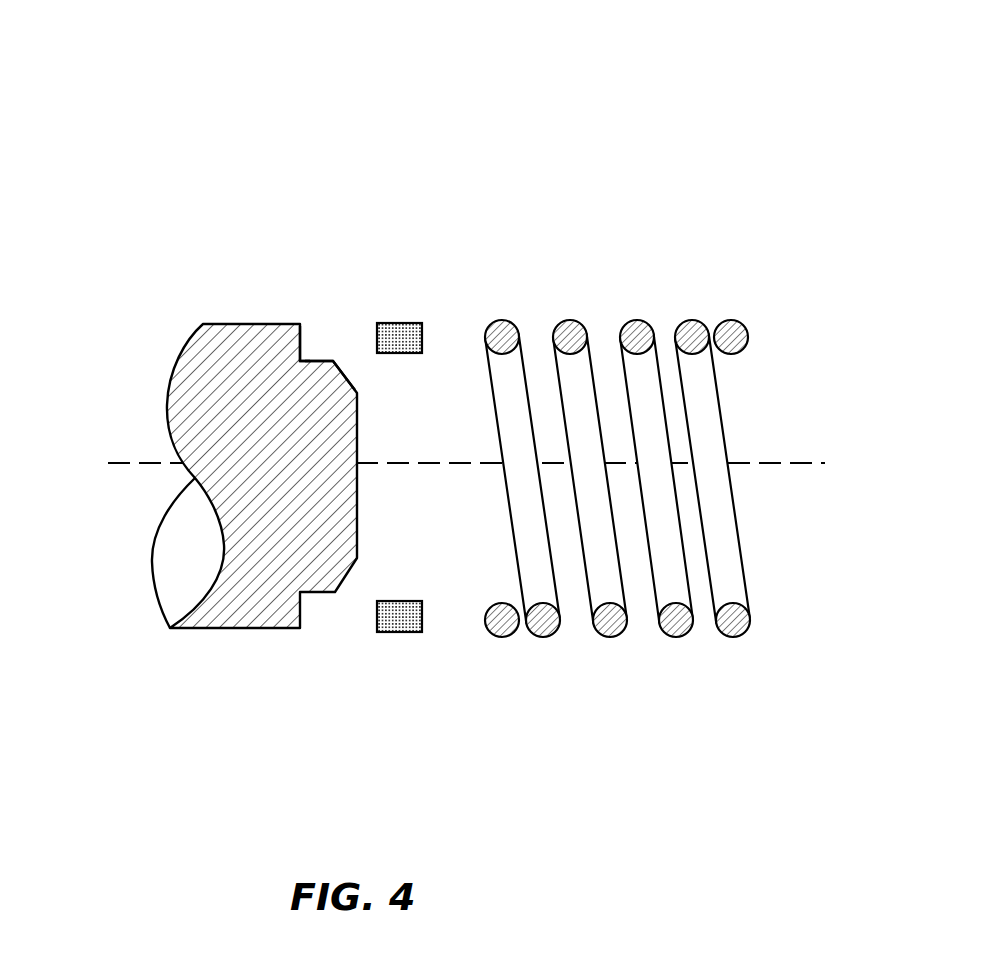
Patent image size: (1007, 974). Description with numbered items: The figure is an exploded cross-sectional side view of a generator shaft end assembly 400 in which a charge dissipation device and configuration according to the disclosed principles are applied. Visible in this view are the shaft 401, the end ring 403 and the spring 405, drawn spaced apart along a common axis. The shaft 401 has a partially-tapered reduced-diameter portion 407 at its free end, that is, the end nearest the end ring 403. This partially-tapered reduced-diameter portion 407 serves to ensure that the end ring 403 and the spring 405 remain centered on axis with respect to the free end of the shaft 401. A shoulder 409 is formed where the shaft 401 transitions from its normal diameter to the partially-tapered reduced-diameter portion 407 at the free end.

The generator shaft end assembly 400 is at (850, 652).
The shaft 401 is at (185, 350).
The end ring 403 is at (402, 323).
The spring 405 is at (513, 323).
The partially-tapered reduced-diameter portion 407 is at (328, 358).
The shoulder 409 is at (305, 331).